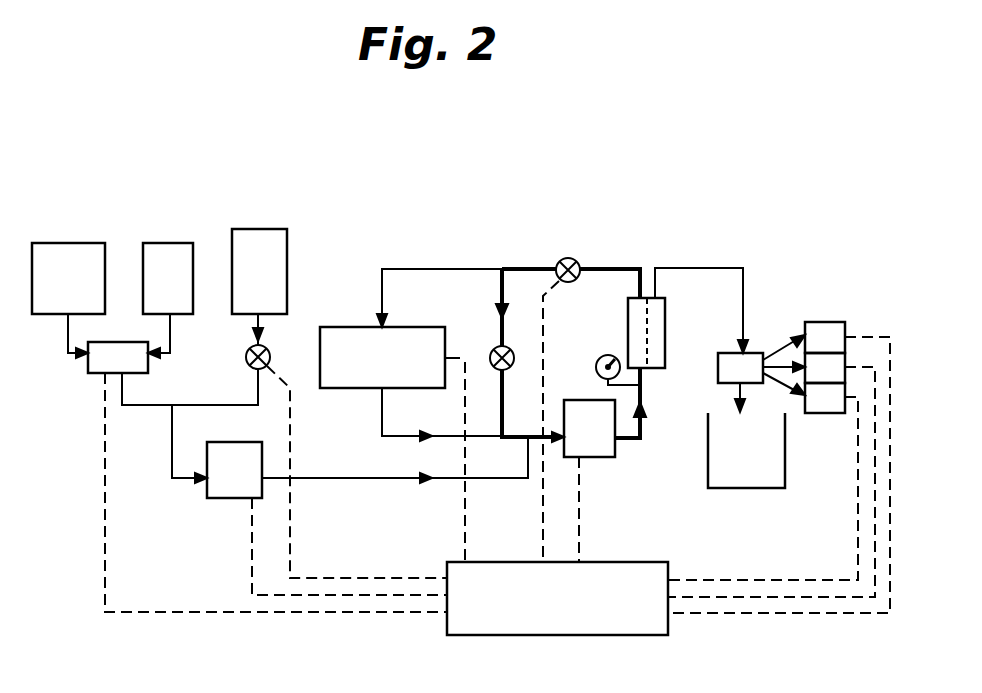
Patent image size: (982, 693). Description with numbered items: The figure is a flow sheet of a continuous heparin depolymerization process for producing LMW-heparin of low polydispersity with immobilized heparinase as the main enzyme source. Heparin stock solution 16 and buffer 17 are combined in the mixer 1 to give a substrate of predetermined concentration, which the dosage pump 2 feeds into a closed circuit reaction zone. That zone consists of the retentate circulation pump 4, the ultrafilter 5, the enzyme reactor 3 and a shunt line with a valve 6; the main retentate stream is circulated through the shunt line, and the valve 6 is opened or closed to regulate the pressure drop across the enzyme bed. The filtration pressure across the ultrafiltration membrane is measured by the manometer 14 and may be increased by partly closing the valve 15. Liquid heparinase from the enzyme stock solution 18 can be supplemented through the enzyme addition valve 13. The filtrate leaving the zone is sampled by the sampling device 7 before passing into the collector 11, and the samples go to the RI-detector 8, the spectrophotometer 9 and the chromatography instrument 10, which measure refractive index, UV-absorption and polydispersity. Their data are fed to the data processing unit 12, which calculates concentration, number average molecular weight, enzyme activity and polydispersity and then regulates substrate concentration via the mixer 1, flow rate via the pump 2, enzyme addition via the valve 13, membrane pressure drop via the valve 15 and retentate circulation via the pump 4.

The mixer 1 is at (126, 370).
The dosage pump 2 is at (243, 484).
The enzyme reactor 3 is at (390, 371).
The retentate circulation pump 4 is at (598, 441).
The ultrafilter 5 is at (628, 318).
The valve 6 is at (494, 350).
The sampling device 7 is at (718, 369).
The RI-detector 8 is at (833, 349).
The spectrophotometer 9 is at (833, 380).
The chromatography instrument 10 is at (837, 410).
The collector 11 is at (758, 469).
The data processing unit 12 is at (572, 608).
The enzyme addition valve 13 is at (247, 353).
The manometer 14 is at (608, 355).
The valve 15 is at (575, 240).
The heparin stock solution 16 is at (82, 287).
The buffer 17 is at (182, 287).
The enzyme stock solution 18 is at (272, 287).